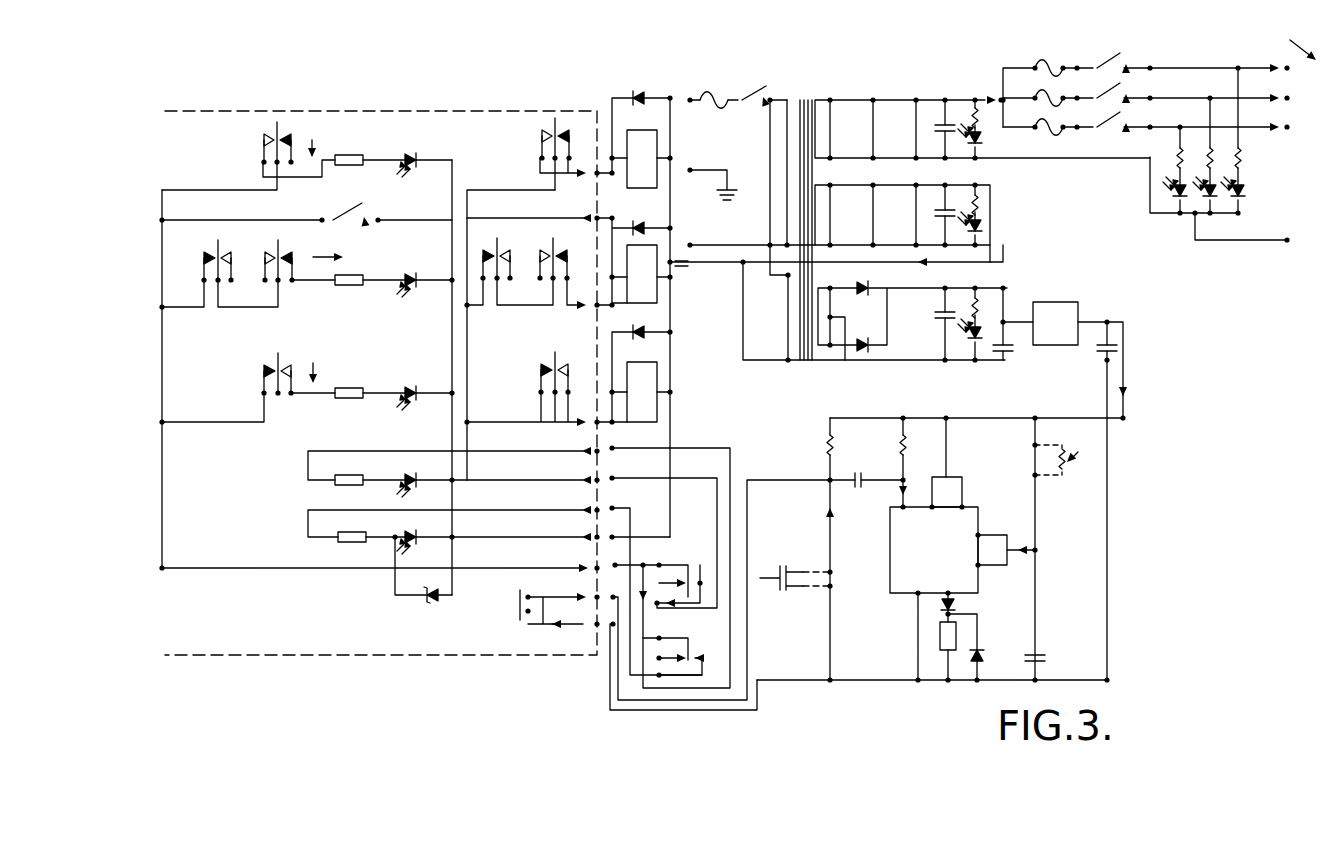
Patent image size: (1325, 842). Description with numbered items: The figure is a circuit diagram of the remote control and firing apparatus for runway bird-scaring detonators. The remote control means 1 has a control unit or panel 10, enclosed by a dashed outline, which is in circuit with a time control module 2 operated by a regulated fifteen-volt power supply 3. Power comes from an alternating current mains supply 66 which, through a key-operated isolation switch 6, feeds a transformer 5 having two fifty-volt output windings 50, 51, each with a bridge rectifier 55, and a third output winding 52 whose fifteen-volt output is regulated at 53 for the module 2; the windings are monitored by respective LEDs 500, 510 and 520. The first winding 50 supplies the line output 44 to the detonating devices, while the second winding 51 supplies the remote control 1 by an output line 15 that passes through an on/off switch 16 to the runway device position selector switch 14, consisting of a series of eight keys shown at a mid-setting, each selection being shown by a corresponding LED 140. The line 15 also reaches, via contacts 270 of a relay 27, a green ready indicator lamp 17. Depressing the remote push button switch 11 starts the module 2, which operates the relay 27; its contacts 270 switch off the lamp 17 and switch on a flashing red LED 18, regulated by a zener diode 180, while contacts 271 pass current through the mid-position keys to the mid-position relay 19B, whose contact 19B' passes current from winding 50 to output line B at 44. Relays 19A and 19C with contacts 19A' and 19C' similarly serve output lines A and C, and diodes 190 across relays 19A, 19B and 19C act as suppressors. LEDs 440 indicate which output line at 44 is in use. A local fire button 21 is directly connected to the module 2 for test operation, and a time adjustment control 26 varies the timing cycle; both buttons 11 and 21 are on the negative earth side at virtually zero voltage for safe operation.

The remote control means 1 is at (489, 134).
The time control module 2 is at (979, 533).
The power supply 3 is at (1142, 334).
The transformer 5 is at (870, 92).
The isolation switch 6 is at (750, 90).
The control unit or panel 10 is at (347, 108).
The remote control push button switch 11 is at (517, 607).
The runway device position selector switch 14 is at (215, 167).
The output line 15 is at (508, 223).
The on/off switch 16 is at (350, 213).
The indicator lamp 17 is at (412, 478).
The further LED 18 is at (420, 537).
The relay 19A is at (666, 155).
The mid-position relay 19B is at (667, 264).
The relay 19C is at (667, 376).
The relay contact 19A' is at (1160, 45).
The relay contact 19B' is at (1175, 85).
The relay contact 19C' is at (1175, 114).
The local fire button 21 is at (774, 580).
The time adjustment control 26 is at (1079, 465).
The relay 27 is at (937, 637).
The line output 44 is at (1214, 60).
The output winding 50 is at (893, 100).
The output winding 51 is at (904, 187).
The third output winding 52 is at (910, 345).
The voltage regulator 53 is at (1066, 328).
The bridge rectifier 55 is at (888, 194).
The alternating current mains supply 66 is at (684, 130).
The LED 140 is at (410, 178).
The zener diode 180 is at (425, 592).
The diodes 190 is at (636, 90).
The relay contacts 270 is at (692, 652).
The relay contacts 271 is at (700, 575).
The line condition indicators 440 is at (1180, 216).
The LED 500 is at (986, 143).
The LED 510 is at (986, 228).
The LED 520 is at (984, 345).